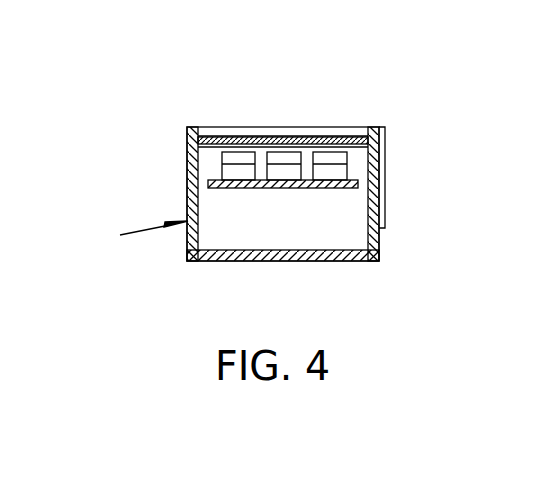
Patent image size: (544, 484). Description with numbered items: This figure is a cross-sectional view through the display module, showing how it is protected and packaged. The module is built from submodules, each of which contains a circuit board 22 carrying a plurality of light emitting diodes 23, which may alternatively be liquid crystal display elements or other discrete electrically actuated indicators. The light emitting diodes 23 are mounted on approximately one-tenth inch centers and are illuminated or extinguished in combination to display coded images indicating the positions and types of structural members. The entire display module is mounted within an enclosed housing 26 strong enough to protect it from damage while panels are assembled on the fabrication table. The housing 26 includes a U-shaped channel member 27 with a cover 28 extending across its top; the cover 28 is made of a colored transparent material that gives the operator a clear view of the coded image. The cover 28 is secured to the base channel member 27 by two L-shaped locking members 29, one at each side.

The circuit board 22 is at (305, 189).
The light emitting diodes 23 is at (243, 152).
The enclosed housing 26 is at (132, 236).
The U-shaped channel member 27 is at (379, 250).
The cover 28 is at (352, 137).
The L-shaped locking members 29 is at (186, 152).